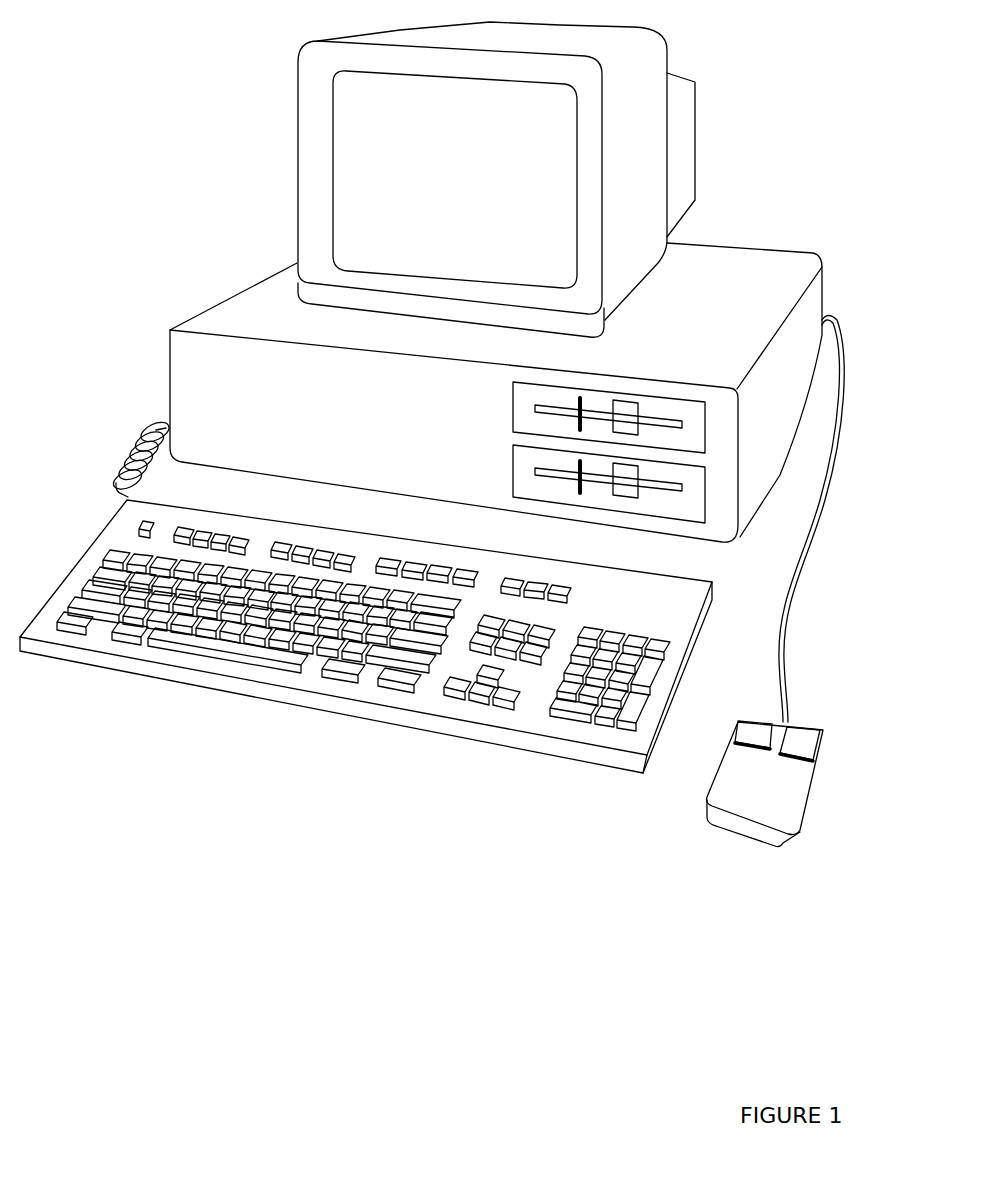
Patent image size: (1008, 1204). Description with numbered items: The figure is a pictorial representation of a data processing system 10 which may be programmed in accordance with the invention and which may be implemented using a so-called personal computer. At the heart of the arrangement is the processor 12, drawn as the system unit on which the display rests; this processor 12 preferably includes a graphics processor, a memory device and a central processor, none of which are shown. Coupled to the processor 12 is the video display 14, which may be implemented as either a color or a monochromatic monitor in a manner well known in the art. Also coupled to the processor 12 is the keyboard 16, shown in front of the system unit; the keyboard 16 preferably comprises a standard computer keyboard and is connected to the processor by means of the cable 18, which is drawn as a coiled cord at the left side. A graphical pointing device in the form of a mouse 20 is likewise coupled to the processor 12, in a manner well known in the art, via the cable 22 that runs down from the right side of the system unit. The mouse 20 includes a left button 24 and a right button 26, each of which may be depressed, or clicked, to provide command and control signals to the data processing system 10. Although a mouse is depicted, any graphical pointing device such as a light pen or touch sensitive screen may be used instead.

The data processing system 10 is at (207, 150).
The processor 12 is at (745, 513).
The video display 14 is at (688, 120).
The keyboard 16 is at (187, 655).
The cable 18 is at (126, 437).
The mouse 20 is at (751, 803).
The cable 22 is at (787, 652).
The left button 24 is at (748, 727).
The right button 26 is at (807, 733).